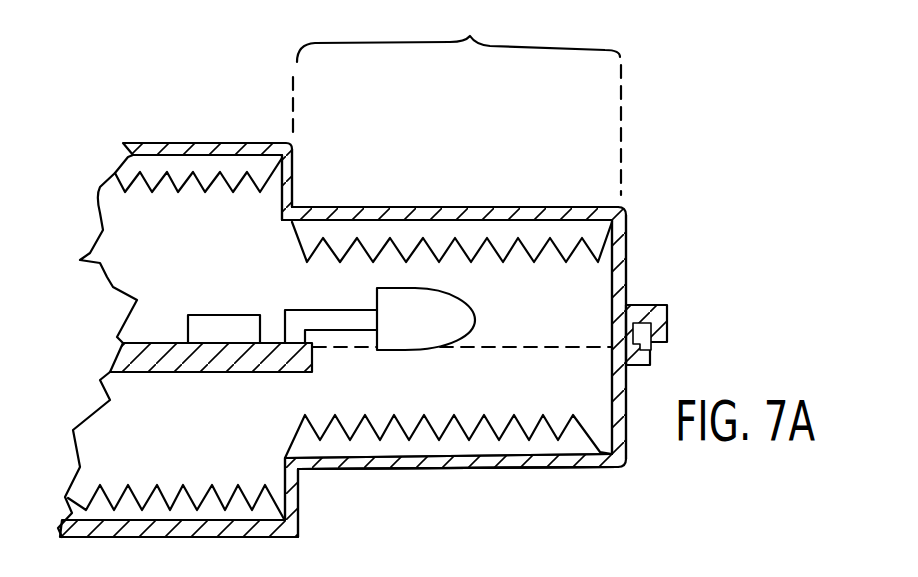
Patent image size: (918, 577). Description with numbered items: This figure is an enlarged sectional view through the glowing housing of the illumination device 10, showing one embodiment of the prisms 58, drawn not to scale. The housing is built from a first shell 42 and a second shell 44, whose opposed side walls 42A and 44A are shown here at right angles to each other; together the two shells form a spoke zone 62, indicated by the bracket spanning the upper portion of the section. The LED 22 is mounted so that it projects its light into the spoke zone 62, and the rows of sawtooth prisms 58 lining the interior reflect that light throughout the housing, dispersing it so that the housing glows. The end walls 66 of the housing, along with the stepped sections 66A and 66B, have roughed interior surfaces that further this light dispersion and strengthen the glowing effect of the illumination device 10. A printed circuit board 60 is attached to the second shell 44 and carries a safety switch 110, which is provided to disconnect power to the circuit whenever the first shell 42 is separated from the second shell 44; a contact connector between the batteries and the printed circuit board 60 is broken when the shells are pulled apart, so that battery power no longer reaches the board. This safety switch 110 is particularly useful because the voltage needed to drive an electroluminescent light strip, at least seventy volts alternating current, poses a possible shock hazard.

The illumination device 10 is at (645, 217).
The LED 22 is at (432, 350).
The first shell 42 is at (390, 195).
The side wall 42A is at (339, 206).
The second shell 44 is at (523, 477).
The side wall 44A is at (582, 470).
The prisms 58 is at (197, 188).
The printed circuit board 60 is at (173, 342).
The spoke zone 62 is at (457, 97).
The end walls 66 is at (625, 277).
The section 66A is at (277, 180).
The section 66B is at (290, 470).
The safety switch 110 is at (248, 327).